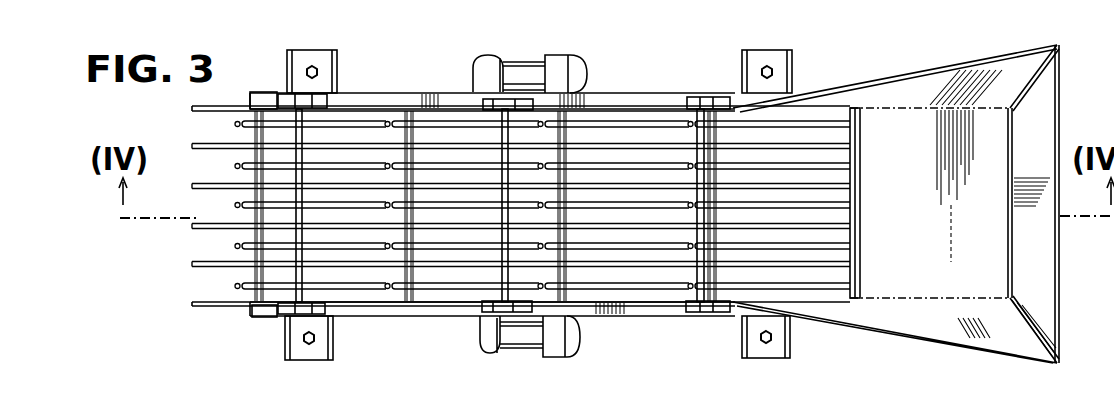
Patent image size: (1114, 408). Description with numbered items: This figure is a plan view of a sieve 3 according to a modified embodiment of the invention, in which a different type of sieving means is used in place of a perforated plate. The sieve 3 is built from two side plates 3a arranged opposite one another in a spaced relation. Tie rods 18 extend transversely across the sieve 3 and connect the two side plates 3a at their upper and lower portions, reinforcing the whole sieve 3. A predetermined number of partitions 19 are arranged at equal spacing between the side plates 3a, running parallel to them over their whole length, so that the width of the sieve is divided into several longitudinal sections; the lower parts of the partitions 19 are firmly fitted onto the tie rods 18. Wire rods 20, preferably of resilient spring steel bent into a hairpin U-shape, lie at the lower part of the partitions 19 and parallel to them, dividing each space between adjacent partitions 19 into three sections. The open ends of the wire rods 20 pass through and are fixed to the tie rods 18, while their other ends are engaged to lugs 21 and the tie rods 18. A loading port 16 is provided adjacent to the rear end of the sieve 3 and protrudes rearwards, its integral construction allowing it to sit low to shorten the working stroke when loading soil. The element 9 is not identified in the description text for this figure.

The sieve 3 is at (653, 83).
The side plates 3a is at (426, 92).
The roller 9 is at (577, 70).
The loading port 16 is at (921, 325).
The tie rods 18 is at (243, 295).
The partitions 19 is at (205, 145).
The wire rods 20 is at (350, 120).
The lugs 21 is at (240, 120).